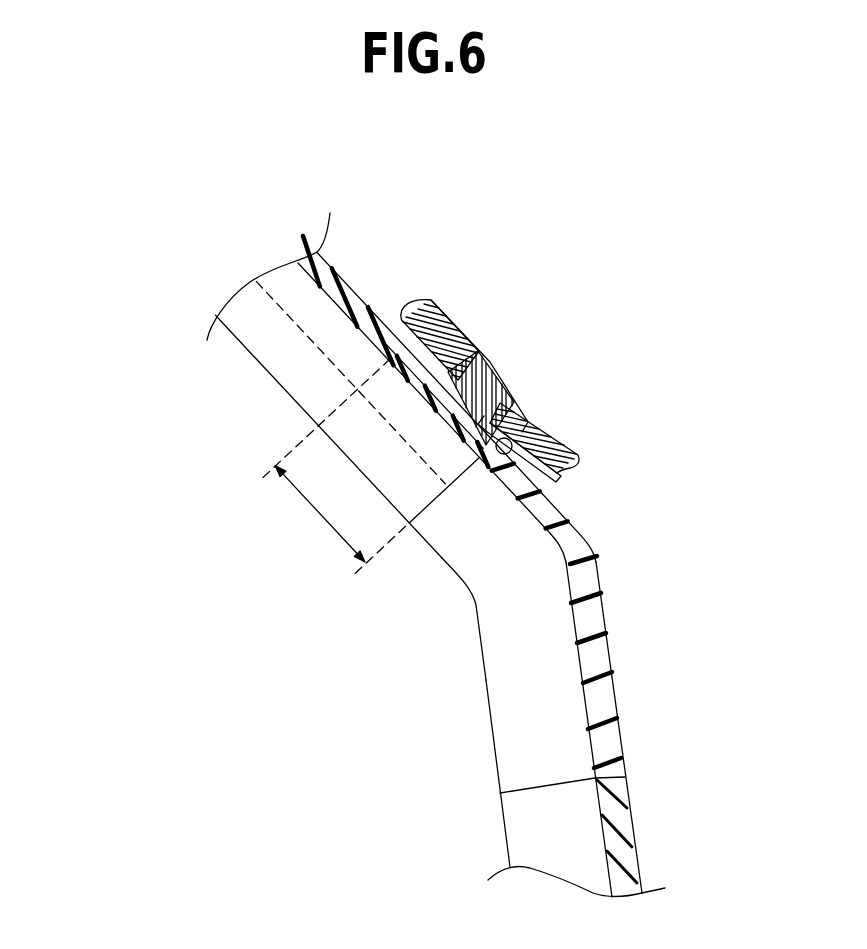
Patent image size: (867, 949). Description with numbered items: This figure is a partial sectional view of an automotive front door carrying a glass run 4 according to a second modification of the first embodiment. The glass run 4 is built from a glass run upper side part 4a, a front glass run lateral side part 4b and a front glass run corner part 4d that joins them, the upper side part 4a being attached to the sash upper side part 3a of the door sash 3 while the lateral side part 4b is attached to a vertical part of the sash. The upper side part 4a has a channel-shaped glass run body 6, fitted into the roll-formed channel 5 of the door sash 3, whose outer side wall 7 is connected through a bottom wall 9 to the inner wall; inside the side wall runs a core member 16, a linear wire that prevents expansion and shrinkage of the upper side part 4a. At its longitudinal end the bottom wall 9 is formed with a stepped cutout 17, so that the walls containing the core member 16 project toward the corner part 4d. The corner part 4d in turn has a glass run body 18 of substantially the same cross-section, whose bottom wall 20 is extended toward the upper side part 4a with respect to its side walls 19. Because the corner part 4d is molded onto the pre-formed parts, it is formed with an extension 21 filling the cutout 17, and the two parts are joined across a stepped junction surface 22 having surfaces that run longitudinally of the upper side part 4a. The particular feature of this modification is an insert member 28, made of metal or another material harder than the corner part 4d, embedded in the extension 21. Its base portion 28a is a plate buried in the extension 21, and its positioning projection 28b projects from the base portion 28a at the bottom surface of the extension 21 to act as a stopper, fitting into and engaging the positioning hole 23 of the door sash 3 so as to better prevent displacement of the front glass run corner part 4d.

The door sash 3 is at (626, 434).
The sash upper side part 3a is at (626, 434).
The glass run 4 is at (370, 605).
The glass run upper side part 4a is at (246, 351).
The front glass run corner part 4d is at (483, 678).
The front glass run lateral side part 4b is at (501, 822).
The channel 5 is at (537, 442).
The glass run body 6 is at (314, 319).
The outer side wall 7 is at (237, 305).
The bottom wall 9 is at (350, 272).
The core member 16 is at (283, 317).
The cutout 17 is at (466, 335).
The glass run body 18 is at (551, 676).
The side walls 19 is at (462, 542).
The bottom wall 20 is at (580, 538).
The extension 21 is at (438, 366).
The stepped junction surface 22 is at (432, 515).
The positioning hole 23 is at (517, 396).
The insert member 28 is at (503, 368).
The base portion 28a is at (463, 340).
The positioning projection 28b is at (500, 395).